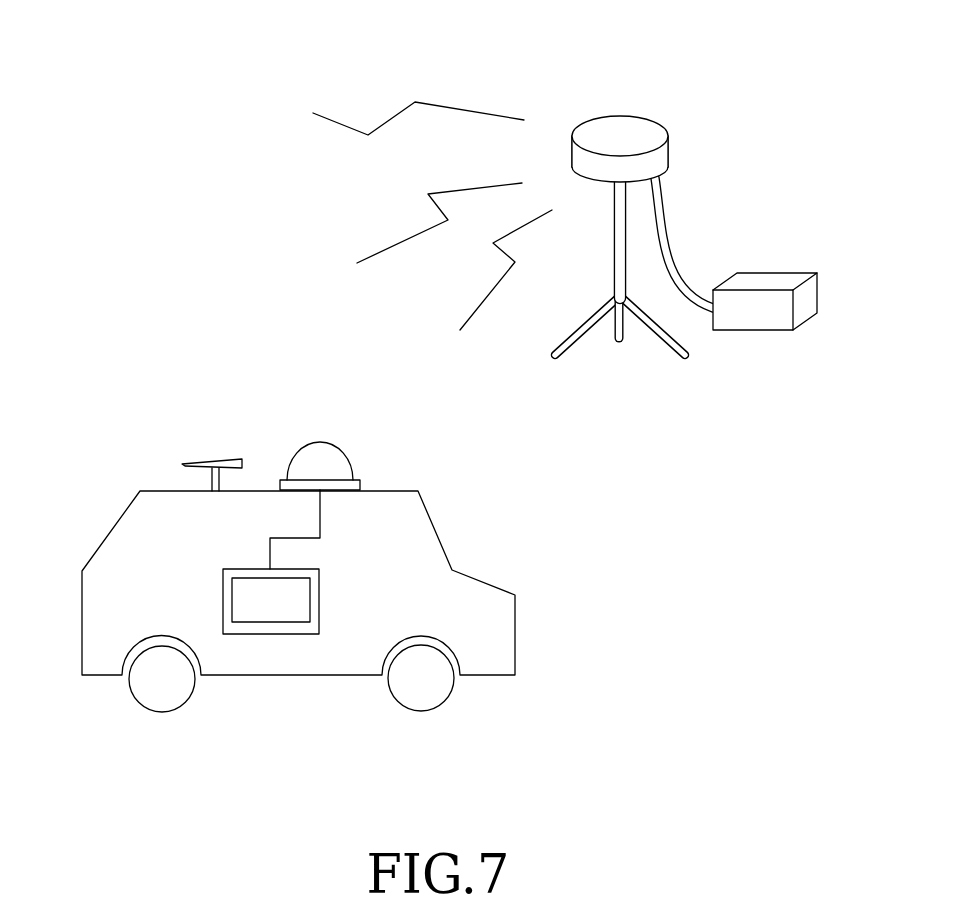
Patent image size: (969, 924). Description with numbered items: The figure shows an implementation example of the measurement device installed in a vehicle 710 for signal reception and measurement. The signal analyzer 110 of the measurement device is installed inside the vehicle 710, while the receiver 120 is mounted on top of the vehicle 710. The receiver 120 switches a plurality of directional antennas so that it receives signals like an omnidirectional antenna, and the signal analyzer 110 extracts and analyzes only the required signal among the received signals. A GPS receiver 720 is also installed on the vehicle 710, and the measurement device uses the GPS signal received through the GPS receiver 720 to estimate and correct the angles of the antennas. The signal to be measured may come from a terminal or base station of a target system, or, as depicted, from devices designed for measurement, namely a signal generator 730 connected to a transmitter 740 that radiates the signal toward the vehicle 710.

The transmitter 740 is at (640, 123).
The signal generator 730 is at (780, 273).
The GPS receiver 720 is at (213, 460).
The receiver 120 is at (343, 452).
The vehicle 710 is at (435, 527).
The signal analyzer 110 is at (318, 602).